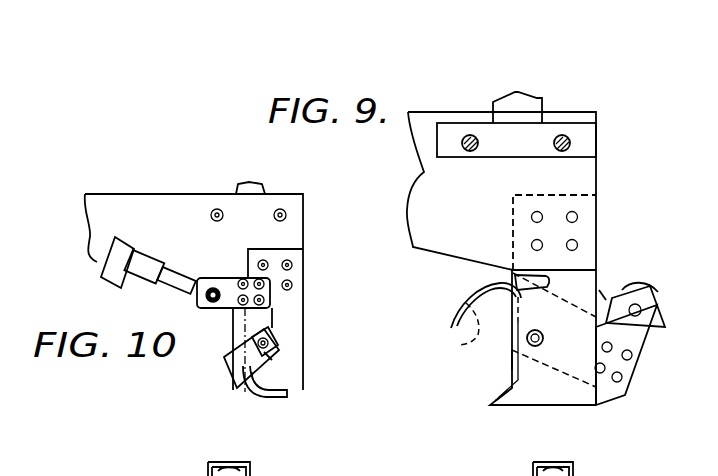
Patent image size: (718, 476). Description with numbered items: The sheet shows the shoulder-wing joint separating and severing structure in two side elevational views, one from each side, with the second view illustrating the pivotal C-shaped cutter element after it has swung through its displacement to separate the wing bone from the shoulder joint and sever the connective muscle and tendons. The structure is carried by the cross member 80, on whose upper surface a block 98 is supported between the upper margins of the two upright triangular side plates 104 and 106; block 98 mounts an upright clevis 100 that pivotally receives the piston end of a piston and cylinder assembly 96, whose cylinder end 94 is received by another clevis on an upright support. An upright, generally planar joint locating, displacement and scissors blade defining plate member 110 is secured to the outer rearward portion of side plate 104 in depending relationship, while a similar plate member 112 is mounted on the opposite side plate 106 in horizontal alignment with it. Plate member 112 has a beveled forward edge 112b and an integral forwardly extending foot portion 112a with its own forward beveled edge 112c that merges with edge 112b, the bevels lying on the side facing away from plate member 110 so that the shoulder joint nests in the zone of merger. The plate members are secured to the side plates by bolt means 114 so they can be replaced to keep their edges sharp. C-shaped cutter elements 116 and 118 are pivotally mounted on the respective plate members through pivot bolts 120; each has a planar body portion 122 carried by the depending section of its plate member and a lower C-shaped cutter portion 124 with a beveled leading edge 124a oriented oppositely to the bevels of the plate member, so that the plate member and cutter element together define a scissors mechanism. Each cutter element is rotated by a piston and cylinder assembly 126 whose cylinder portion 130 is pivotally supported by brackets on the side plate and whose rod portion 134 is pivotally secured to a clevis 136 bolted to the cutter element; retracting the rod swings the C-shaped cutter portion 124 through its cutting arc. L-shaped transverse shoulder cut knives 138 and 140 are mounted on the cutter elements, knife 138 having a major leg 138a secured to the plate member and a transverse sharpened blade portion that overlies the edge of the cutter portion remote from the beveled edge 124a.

In FIG. 10, the cross member 80 is at (0, 238).
In FIG. 10, the cylinder end 94 is at (209, 469).
In FIG. 9, the cylinder end 94 is at (531, 469).
In FIG. 10, the piston and cylinder assembly 96 is at (319, 470).
In FIG. 9, the piston and cylinder assembly 96 is at (644, 470).
In FIG. 9, the block 98 is at (550, 130).
In FIG. 10, the clevis 100 is at (238, 189).
In FIG. 10, the side plate 104 is at (97, 200).
In FIG. 9, the side plate 106 is at (407, 180).
In FIG. 10, the plate member 110 is at (293, 298).
In FIG. 9, the plate member 112 is at (563, 392).
In FIG. 9, the foot portion 112a is at (513, 403).
In FIG. 9, the beveled forward edge 112b is at (511, 361).
In FIG. 9, the forward beveled edge 112c is at (500, 392).
In FIG. 10, the bolt means 114 is at (288, 260).
In FIG. 9, the bolt means 114 is at (574, 214).
In FIG. 10, the C-shaped cutter element 116 is at (226, 332).
In FIG. 9, the C-shaped cutter element 118 is at (634, 400).
In FIG. 10, the pivot bolt 120 is at (270, 322).
In FIG. 9, the pivot bolt 120 is at (543, 331).
In FIG. 10, the planar body portion 122 is at (280, 313).
In FIG. 9, the planar body portion 122 is at (640, 347).
In FIG. 10, the C-shaped cutter portion 124 is at (238, 391).
In FIG. 9, the C-shaped cutter portion 124 is at (480, 291).
In FIG. 10, the beveled leading edge 124a is at (300, 380).
In FIG. 9, the beveled leading edge 124a is at (477, 334).
In FIG. 10, the piston and cylinder assembly 126 is at (93, 271).
In FIG. 10, the cylinder portion 130 is at (125, 247).
In FIG. 10, the rod portion 134 is at (153, 263).
In FIG. 9, the rod portion 134 is at (600, 292).
In FIG. 10, the clevis 136 is at (230, 277).
In FIG. 9, the clevis 136 is at (660, 307).
In FIG. 10, the L-shaped transverse shoulder cut knife 138 is at (224, 372).
In FIG. 10, the major leg 138a is at (268, 355).
In FIG. 9, the L-shaped transverse shoulder cut knife 140 is at (524, 262).